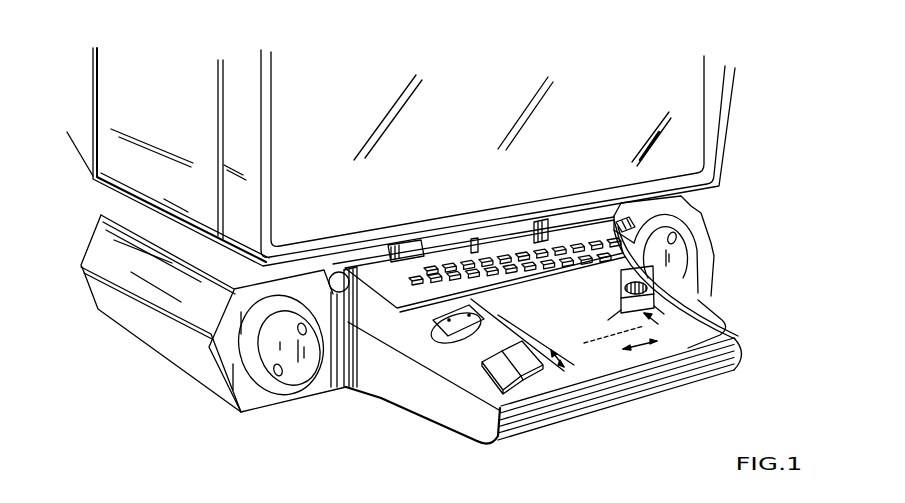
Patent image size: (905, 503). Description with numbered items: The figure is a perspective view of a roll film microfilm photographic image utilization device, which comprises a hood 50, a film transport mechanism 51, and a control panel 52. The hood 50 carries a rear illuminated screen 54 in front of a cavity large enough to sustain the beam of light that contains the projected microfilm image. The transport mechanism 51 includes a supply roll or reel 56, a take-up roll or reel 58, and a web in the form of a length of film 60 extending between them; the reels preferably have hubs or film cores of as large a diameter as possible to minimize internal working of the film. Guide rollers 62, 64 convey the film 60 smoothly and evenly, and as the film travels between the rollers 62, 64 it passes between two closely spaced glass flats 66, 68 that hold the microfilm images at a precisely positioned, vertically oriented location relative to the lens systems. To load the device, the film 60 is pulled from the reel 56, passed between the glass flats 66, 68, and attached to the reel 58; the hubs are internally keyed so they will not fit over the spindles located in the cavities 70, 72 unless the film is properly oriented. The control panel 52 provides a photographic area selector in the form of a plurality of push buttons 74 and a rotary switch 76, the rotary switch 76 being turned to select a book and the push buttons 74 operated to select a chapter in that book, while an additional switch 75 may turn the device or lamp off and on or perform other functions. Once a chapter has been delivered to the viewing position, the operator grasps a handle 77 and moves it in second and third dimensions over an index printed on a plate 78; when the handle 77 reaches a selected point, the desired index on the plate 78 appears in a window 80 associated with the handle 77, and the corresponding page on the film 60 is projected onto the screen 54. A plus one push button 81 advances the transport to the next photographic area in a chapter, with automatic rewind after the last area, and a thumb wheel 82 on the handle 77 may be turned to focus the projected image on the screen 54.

The hood 50 is at (144, 107).
The film transport mechanism 51 is at (166, 301).
The control panel 52 is at (439, 411).
The rear illuminated screen 54 is at (411, 137).
The supply reel 56 is at (283, 367).
The take-up reel 58 is at (671, 259).
The film 60 is at (343, 318).
The guide roller 62 is at (321, 267).
The guide roller 64 is at (620, 201).
The glass flat 66 is at (408, 254).
The glass flat 68 is at (498, 227).
The cavity 70 is at (203, 322).
The cavity 72 is at (690, 207).
The push buttons 74 is at (396, 275).
The switch 75 is at (511, 374).
The rotary switch 76 is at (443, 333).
The handle 77 is at (600, 308).
The plate 78 is at (583, 347).
The window 80 is at (688, 302).
The plus one push button 81 is at (630, 237).
The thumb wheel 82 is at (613, 278).